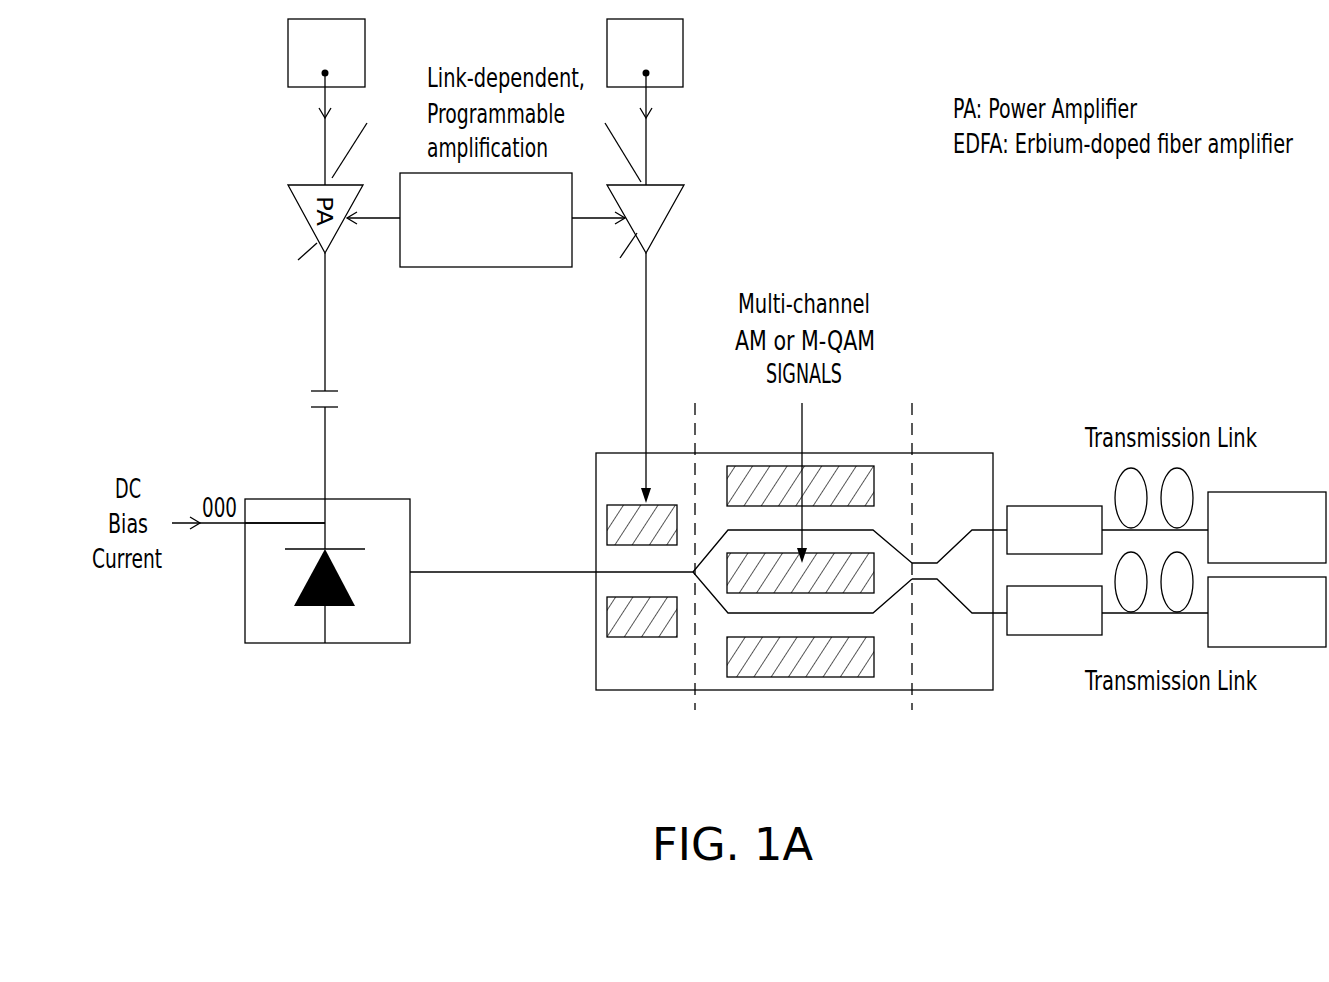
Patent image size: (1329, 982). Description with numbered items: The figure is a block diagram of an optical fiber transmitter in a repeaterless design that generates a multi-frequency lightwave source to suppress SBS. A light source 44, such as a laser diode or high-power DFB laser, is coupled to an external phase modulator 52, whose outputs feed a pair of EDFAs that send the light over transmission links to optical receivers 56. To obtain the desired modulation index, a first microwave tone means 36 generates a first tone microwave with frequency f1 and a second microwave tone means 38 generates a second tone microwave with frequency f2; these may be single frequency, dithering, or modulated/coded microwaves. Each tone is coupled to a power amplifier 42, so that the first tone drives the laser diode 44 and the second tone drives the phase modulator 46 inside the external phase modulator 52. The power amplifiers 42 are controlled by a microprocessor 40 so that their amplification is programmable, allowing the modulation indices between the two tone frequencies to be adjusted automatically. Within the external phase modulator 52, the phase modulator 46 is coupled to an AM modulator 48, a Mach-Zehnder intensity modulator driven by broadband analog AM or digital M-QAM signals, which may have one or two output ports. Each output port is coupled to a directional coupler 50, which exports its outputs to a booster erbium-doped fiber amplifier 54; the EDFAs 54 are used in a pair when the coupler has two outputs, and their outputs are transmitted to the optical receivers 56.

The first microwave tone means 36 is at (288, 57).
The second microwave tone means 38 is at (683, 40).
The microprocessor 40 is at (503, 267).
The power amplifier 42 is at (670, 183).
The light source 44 is at (363, 644).
The phase modulator 46 is at (645, 637).
The AM modulator 48 is at (802, 690).
The directional coupler 50 is at (959, 645).
The external phase modulator 52 is at (801, 607).
The erbium-doped fiber amplifier 54 is at (1063, 635).
The optical receiver 56 is at (1310, 490).